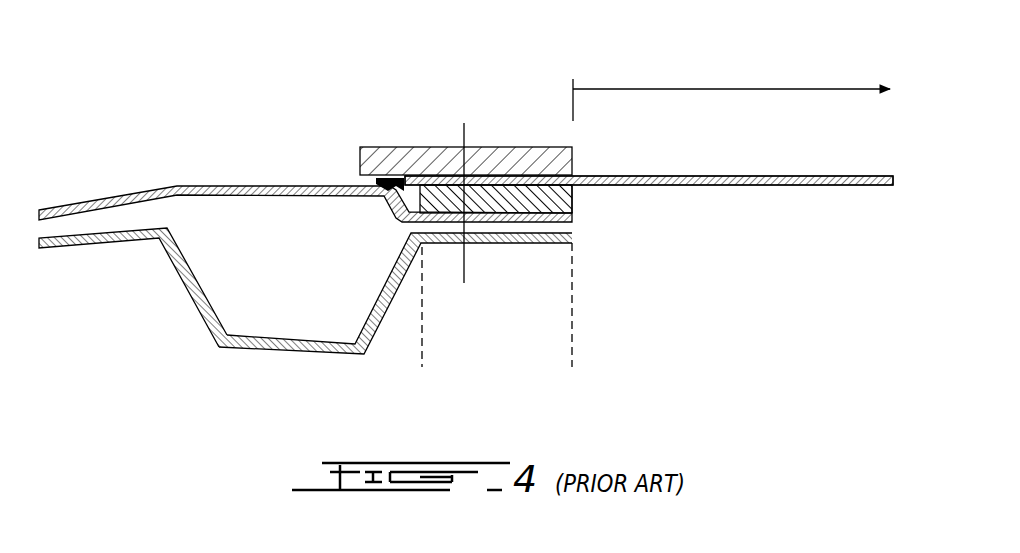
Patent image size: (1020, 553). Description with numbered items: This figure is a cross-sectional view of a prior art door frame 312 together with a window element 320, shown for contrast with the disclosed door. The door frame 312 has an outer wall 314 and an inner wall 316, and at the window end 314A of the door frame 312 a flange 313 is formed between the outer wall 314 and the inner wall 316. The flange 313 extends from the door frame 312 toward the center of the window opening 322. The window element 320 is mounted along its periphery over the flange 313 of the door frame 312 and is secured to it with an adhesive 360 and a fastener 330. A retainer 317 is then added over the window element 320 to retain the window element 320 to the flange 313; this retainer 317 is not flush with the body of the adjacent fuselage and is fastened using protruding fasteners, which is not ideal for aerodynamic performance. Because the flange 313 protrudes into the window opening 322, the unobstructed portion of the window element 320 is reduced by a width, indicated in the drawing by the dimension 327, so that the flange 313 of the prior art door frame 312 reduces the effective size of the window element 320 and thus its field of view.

The door frame 312 is at (220, 354).
The flange 313 is at (582, 229).
The outer wall 314 is at (297, 198).
The window end 314A is at (582, 198).
The inner wall 316 is at (378, 292).
The retainer 317 is at (405, 165).
The window element 320 is at (866, 190).
The window opening 322 is at (824, 232).
The direction 327 is at (731, 88).
The fastener 330 is at (479, 147).
The adhesive 360 is at (543, 198).